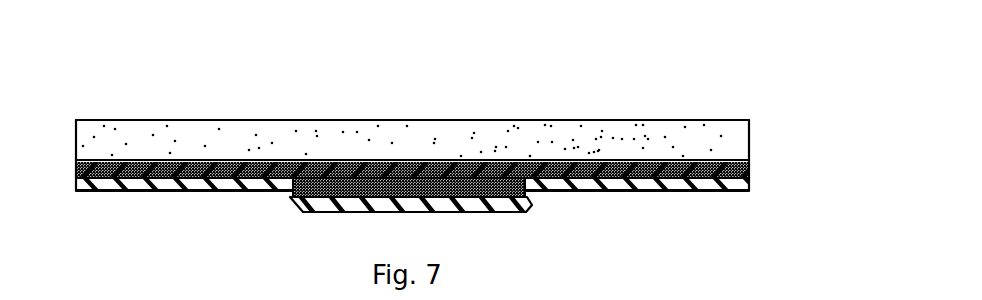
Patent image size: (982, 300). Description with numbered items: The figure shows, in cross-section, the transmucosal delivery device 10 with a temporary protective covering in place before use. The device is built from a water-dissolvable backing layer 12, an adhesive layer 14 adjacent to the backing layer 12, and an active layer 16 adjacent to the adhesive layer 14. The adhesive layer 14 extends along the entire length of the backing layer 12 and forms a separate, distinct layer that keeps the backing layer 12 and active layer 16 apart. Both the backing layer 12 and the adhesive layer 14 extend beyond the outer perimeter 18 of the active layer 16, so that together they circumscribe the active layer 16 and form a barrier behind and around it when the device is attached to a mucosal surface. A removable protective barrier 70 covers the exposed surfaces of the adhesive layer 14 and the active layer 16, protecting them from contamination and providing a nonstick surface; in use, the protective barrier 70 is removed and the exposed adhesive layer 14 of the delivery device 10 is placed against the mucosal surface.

The transmucosal delivery device 10 is at (542, 94).
The water-dissolvable backing layer 12 is at (738, 127).
The adhesive layer 14 is at (694, 177).
The active layer 16 is at (497, 189).
The outer perimeter 18 is at (300, 194).
The removable protective barrier 70 is at (183, 187).